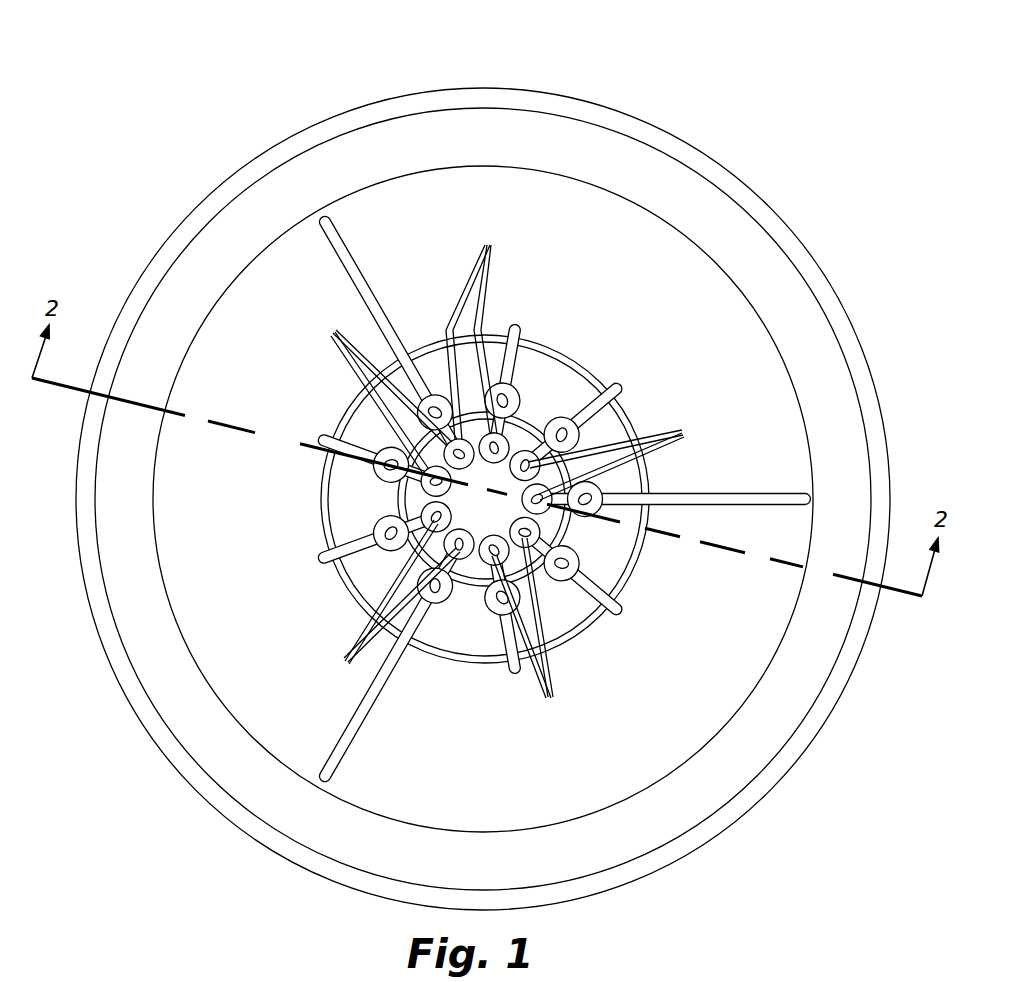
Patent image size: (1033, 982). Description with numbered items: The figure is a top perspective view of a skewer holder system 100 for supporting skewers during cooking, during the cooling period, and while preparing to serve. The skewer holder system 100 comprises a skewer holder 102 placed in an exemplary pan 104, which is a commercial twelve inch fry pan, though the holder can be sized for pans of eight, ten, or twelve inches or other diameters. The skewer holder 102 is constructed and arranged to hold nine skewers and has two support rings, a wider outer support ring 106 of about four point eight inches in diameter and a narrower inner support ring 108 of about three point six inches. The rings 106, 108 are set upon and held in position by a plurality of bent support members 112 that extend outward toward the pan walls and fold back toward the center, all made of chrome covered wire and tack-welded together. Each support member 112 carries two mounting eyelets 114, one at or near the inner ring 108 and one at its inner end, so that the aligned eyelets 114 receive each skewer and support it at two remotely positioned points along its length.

The skewer holder system 100 is at (346, 84).
The skewer holder 102 is at (332, 264).
The pan 104 is at (248, 176).
The outer support ring 106 is at (581, 360).
The inner support ring 108 is at (590, 373).
The support members 112 is at (545, 325).
The eyelets 114 is at (509, 473).